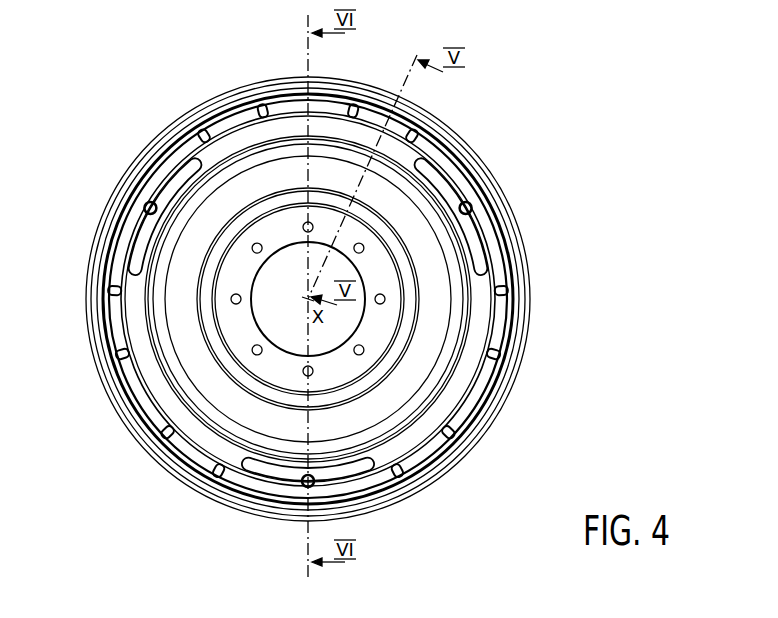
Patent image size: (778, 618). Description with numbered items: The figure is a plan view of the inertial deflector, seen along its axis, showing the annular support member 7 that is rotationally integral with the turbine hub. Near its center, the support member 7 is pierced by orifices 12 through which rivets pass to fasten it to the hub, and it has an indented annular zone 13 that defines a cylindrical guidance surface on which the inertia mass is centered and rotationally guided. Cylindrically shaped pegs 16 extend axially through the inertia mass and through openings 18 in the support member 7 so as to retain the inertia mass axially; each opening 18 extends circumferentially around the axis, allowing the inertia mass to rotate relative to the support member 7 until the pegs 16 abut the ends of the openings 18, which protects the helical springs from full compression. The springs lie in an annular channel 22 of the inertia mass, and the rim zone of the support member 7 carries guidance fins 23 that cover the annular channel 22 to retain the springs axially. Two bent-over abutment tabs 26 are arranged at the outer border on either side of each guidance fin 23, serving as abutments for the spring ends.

The support member 7 is at (433, 272).
The orifices 12 is at (384, 296).
The indented annular zone 13 is at (430, 383).
The pegs 16 is at (146, 206).
The opening 18 is at (172, 178).
The annular channel 22 is at (198, 132).
The guidance fins 23 is at (290, 103).
The abutment tab 26 is at (236, 120).